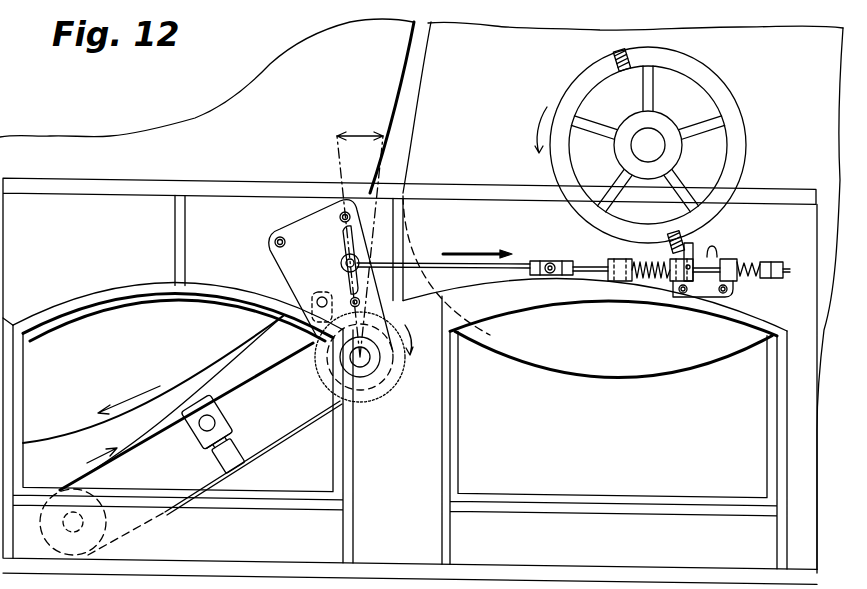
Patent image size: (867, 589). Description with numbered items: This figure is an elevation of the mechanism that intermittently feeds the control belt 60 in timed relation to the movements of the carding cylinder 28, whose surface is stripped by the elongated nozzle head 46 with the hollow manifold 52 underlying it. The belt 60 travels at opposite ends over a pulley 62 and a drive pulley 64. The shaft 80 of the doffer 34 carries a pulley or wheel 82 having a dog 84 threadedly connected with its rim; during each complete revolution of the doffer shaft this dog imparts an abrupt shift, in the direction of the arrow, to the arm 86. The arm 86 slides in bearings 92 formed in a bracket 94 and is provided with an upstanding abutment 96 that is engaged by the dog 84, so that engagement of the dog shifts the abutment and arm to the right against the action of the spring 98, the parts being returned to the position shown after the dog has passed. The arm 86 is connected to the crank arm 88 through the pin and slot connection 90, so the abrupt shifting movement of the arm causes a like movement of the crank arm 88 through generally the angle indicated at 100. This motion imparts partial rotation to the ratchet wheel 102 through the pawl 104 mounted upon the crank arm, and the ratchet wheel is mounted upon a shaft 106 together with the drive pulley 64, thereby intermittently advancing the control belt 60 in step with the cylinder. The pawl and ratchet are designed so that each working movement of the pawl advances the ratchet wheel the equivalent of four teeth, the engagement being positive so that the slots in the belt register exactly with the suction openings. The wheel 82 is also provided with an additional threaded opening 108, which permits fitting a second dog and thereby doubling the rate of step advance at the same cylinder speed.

The carding cylinder 28 is at (48, 437).
The doffer 34 is at (421, 296).
The nozzle head 46 is at (218, 378).
The manifold 52 is at (200, 433).
The control belt 60 is at (240, 386).
The pulley 62 is at (98, 500).
The drive pulley 64 is at (327, 397).
The shaft 80 is at (652, 145).
The pulley or wheel 82 is at (703, 80).
The dog 84 is at (682, 240).
The arm 86 is at (413, 263).
The crank arm 88 is at (285, 257).
The pin and slot connection 90 is at (345, 265).
The bearings 92 is at (608, 262).
The bracket 94 is at (713, 294).
The upstanding abutment 96 is at (693, 247).
The spring 98 is at (617, 280).
The angle 100 is at (343, 137).
The ratchet wheel 102 is at (455, 304).
The pawl 104 is at (287, 334).
The shaft 106 is at (355, 362).
The additional threaded opening 108 is at (622, 50).